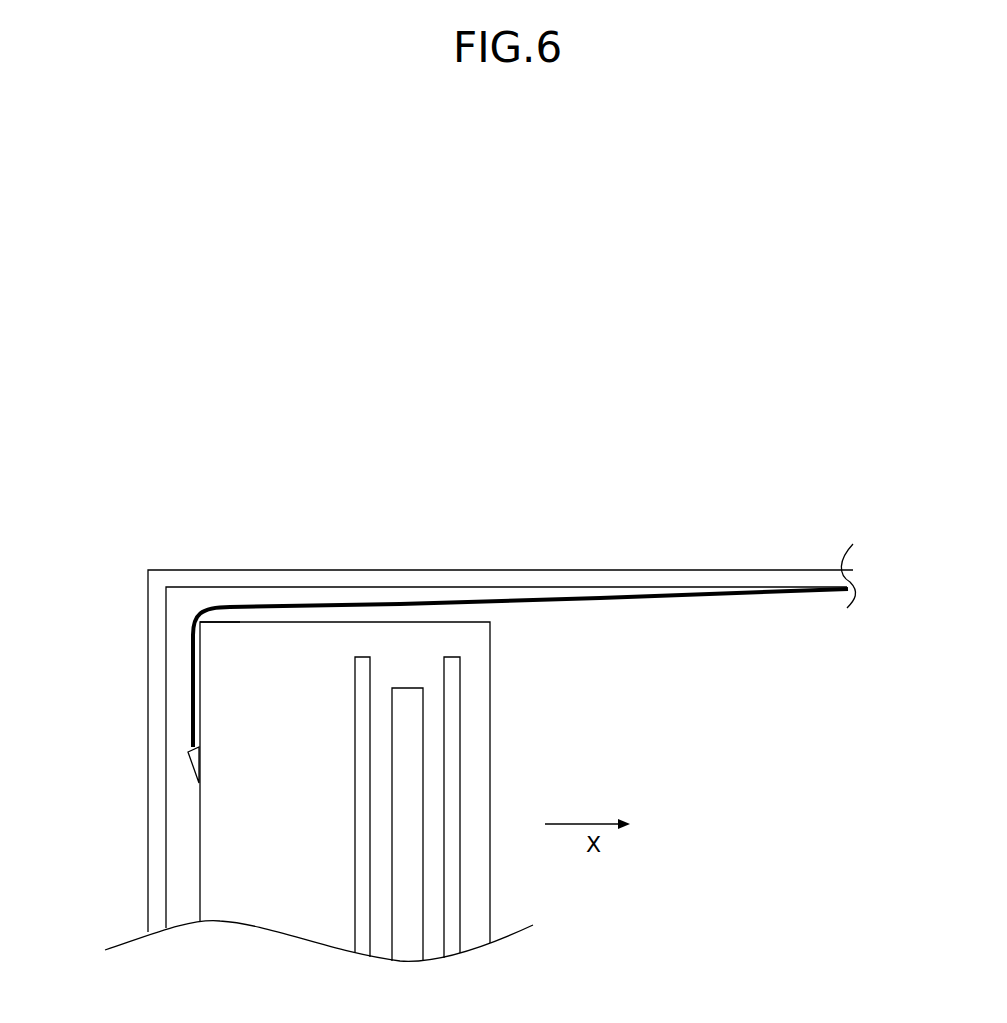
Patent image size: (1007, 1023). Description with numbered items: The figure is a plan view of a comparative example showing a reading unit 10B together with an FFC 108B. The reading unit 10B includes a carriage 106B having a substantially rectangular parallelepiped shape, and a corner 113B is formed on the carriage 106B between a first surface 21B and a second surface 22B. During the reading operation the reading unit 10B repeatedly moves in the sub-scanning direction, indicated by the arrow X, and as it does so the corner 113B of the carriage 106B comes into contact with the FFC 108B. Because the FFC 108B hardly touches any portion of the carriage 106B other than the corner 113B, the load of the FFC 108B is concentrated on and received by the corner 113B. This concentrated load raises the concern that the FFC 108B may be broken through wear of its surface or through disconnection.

The reading unit 10B is at (403, 611).
The first surface 21B is at (240, 620).
The second surface 22B is at (193, 663).
The carriage 106B is at (300, 695).
The FFC 108B is at (548, 597).
The corner 113B is at (198, 621).